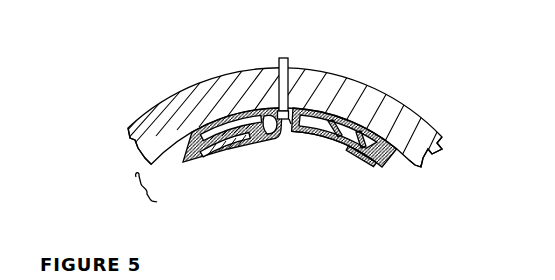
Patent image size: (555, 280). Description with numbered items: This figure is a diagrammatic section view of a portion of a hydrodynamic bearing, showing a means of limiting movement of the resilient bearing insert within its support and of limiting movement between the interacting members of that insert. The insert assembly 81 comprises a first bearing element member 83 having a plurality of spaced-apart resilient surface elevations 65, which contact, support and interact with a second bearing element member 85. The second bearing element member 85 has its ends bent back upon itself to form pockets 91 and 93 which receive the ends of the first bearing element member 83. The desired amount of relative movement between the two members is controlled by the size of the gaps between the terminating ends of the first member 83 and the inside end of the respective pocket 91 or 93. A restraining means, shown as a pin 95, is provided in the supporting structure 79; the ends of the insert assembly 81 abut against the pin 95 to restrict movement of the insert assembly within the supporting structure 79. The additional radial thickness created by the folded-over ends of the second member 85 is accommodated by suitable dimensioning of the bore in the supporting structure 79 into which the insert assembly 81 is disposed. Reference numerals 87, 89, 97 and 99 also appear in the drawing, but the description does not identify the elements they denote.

The resilient surface elevations 65 is at (382, 90).
The supporting structure 79 is at (173, 96).
The first bearing element member 83 is at (400, 103).
The seal carrier 87 is at (202, 136).
The pocket 91 is at (257, 113).
The pocket 93 is at (311, 115).
The seal ring lower wall 89 is at (378, 150).
The second bearing element member 85 is at (371, 169).
The pin 95 is at (283, 58).
The pin head 97 is at (285, 121).
The retainer 99 is at (289, 124).
The insert assembly 81 is at (138, 194).